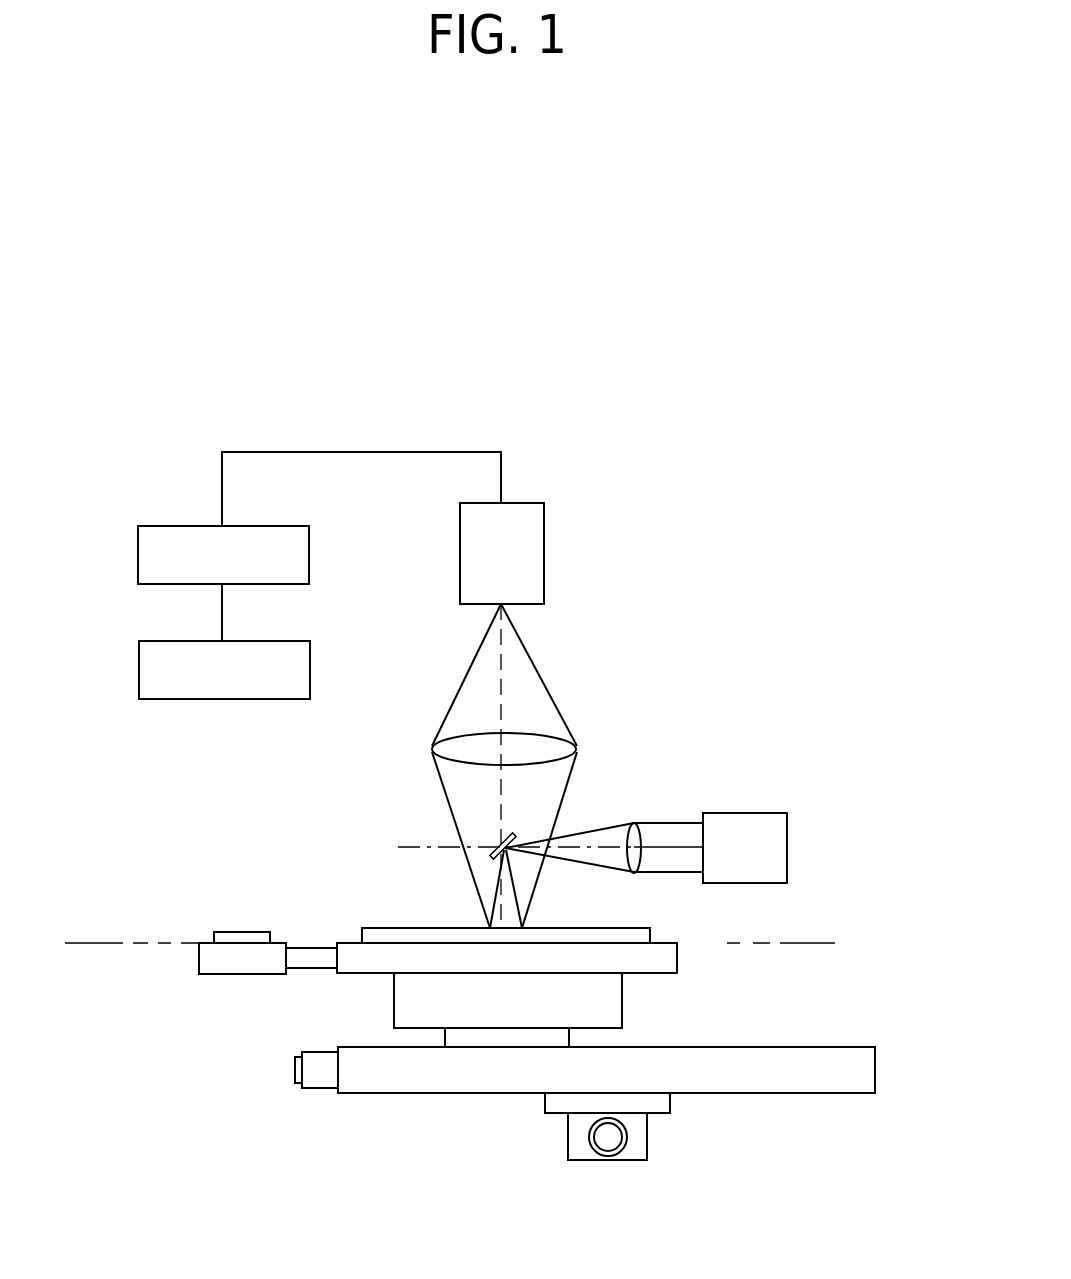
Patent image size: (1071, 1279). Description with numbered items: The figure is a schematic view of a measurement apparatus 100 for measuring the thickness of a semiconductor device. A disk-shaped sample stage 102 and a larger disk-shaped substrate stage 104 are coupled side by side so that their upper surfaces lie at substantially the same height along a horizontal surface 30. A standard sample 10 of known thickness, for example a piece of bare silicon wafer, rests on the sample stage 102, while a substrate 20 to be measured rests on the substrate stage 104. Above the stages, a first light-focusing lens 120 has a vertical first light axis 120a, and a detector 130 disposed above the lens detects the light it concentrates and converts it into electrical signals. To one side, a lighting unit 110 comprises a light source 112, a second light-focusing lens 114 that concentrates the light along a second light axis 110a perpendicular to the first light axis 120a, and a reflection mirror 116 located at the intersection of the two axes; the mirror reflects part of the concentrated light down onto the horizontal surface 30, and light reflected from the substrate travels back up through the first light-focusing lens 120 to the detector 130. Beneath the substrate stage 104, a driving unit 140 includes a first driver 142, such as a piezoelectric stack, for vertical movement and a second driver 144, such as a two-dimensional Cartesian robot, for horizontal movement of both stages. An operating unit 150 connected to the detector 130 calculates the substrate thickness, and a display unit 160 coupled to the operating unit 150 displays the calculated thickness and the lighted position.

The measurement apparatus 100 is at (635, 623).
The standard sample 10 is at (243, 932).
The substrate 20 is at (383, 930).
The horizontal surface 30 is at (148, 940).
The sample stage 102 is at (201, 962).
The substrate stage 104 is at (672, 962).
The lighting unit 110 is at (691, 813).
The second light axis 110a is at (650, 850).
The light source 112 is at (787, 855).
The second light-focusing lens 114 is at (633, 822).
The reflection mirror 116 is at (500, 843).
The first light-focusing lens 120 is at (432, 746).
The first light axis 120a is at (503, 677).
The detector 130 is at (544, 537).
The driving unit 140 is at (575, 1094).
The first driver 142 is at (398, 1008).
The second driver 144 is at (493, 1093).
The operating unit 150 is at (138, 549).
The display unit 160 is at (139, 663).